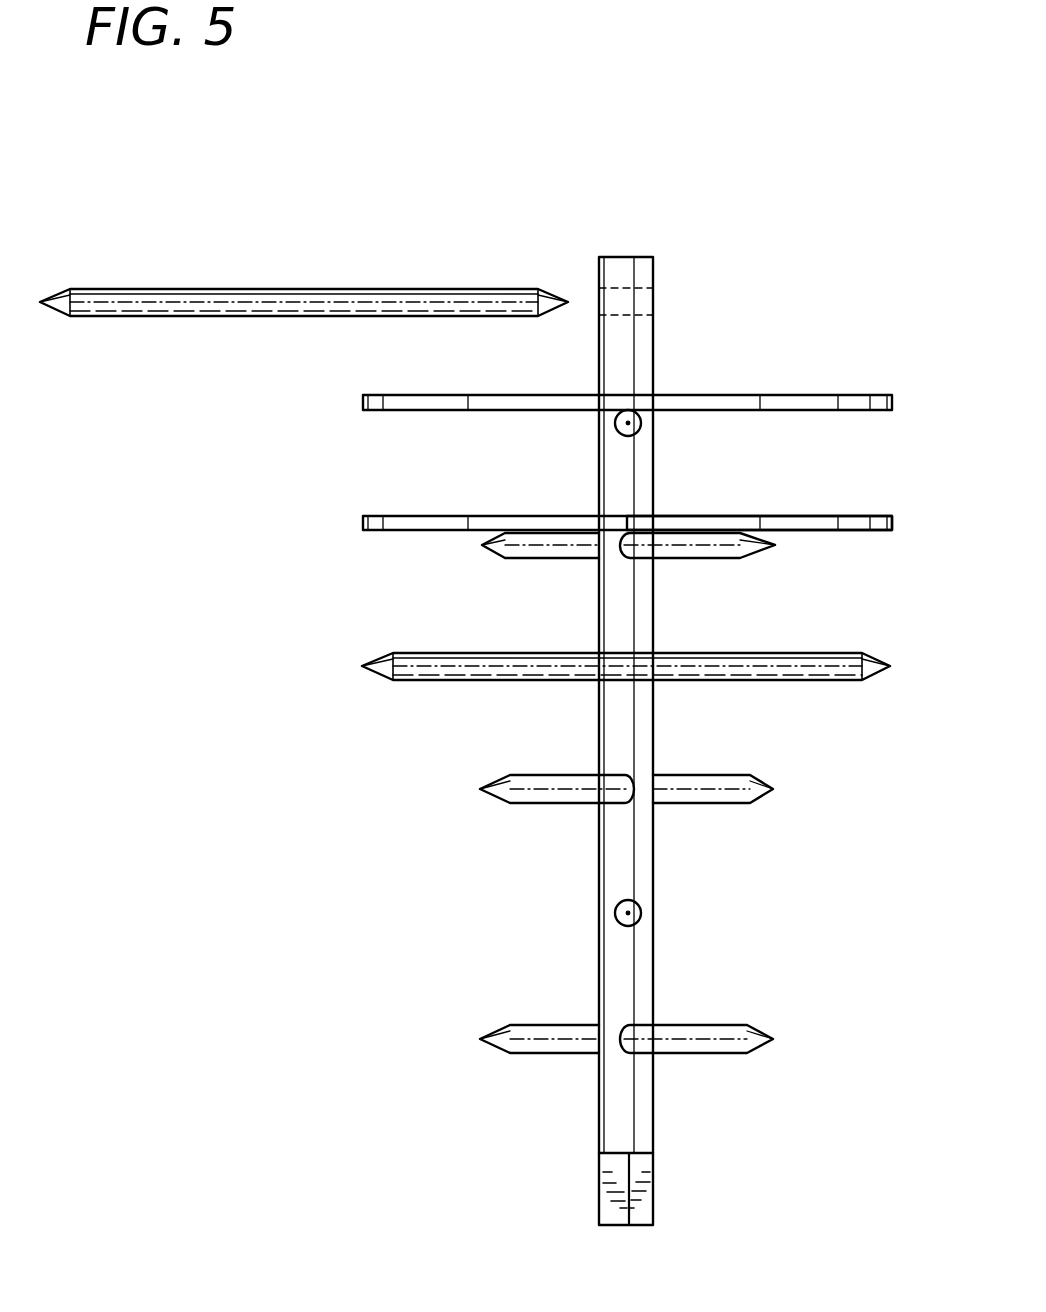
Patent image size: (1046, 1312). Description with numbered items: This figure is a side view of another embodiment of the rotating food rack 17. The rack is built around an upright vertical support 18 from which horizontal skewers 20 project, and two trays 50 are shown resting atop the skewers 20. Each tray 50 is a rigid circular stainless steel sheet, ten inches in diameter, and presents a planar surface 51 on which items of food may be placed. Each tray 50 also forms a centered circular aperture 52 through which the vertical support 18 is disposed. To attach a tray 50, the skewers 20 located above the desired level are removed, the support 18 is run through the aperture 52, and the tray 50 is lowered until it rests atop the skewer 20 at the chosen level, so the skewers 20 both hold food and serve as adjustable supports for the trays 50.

The rotating food rack 17 is at (637, 165).
The vertical support 18 is at (635, 257).
The skewer 20 is at (420, 289).
The tray 50 is at (862, 533).
The planar surface 51 is at (450, 515).
The centered circular aperture 52 is at (656, 515).